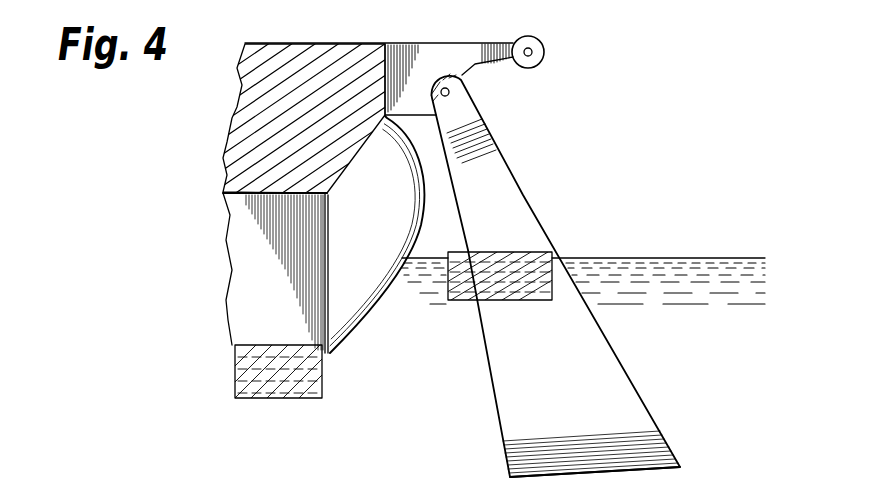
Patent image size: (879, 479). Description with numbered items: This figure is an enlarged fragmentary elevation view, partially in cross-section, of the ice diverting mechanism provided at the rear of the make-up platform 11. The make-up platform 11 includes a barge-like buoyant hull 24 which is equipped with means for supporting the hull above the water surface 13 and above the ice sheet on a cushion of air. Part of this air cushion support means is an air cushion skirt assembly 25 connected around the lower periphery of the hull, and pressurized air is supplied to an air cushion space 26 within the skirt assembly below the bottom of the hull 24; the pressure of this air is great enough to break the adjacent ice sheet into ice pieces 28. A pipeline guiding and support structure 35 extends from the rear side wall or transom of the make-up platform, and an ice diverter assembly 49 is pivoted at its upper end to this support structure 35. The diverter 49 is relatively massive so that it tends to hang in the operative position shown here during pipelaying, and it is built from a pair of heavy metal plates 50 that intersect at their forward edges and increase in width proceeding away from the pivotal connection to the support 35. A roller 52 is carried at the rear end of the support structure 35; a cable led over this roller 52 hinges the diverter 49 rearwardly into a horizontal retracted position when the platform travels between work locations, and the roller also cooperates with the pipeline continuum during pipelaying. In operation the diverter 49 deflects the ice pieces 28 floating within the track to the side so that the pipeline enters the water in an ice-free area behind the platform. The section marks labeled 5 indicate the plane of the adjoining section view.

The make-up platform 11 is at (219, 104).
The buoyant hull 24 is at (242, 180).
The air cushion space 26 is at (292, 310).
The air cushion skirt assembly 25 is at (345, 330).
The ice pieces 28 is at (300, 396).
The pipeline guiding and support structure 35 is at (447, 61).
The ice diverter assembly 49 is at (519, 180).
The heavy metal plates 50 is at (628, 388).
The roller 52 is at (546, 48).
The water surface 13 is at (592, 257).
The section line 5- 5 is at (435, 241).